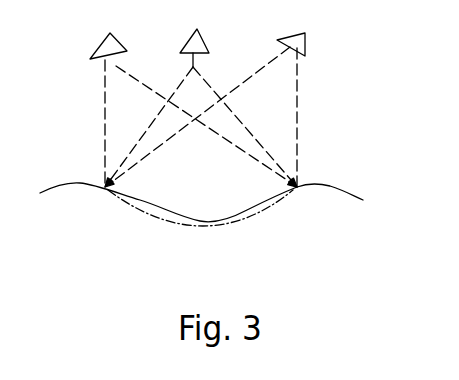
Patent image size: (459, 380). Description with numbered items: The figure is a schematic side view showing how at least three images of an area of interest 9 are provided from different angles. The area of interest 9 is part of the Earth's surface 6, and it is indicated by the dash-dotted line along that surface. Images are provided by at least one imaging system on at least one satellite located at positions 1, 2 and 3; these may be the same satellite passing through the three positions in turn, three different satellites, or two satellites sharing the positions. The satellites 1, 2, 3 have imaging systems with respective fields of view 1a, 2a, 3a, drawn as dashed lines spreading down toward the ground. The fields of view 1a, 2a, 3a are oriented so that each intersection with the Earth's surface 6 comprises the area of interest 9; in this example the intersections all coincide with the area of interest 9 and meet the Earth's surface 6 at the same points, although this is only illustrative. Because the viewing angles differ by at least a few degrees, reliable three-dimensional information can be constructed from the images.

The satellite position 1 is at (112, 31).
The field of view 1a is at (121, 65).
The satellite position 2 is at (203, 28).
The field of view 2a is at (204, 65).
The satellite position 3 is at (307, 34).
The field of view 3a is at (300, 125).
The Earth's surface 6 is at (352, 195).
The area of interest 9 is at (161, 212).